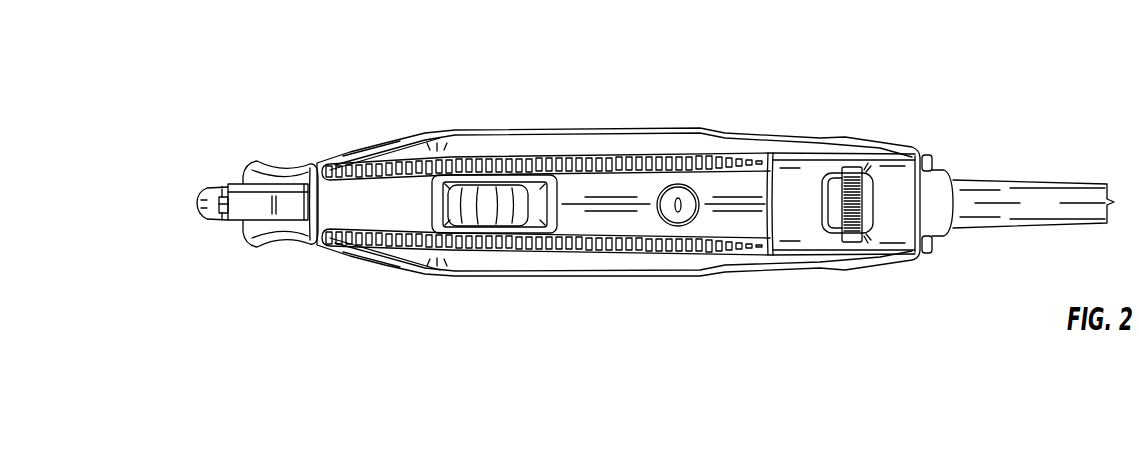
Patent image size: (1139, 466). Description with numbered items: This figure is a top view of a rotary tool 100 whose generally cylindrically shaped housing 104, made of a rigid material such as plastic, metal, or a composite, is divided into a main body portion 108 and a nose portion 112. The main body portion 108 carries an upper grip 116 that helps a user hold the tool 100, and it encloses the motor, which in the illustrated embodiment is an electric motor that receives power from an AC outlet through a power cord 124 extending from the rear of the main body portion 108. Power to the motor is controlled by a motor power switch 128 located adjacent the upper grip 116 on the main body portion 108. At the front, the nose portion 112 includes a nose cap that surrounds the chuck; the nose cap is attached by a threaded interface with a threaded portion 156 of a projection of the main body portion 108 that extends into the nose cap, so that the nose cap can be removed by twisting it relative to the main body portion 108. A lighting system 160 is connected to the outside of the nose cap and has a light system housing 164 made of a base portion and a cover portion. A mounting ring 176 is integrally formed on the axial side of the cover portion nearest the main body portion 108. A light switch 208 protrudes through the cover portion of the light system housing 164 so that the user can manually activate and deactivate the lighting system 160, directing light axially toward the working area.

The rotary tool 100 is at (226, 60).
The housing 104 is at (558, 268).
The main body portion 108 is at (680, 318).
The nose portion 112 is at (190, 160).
The upper grip 116 is at (623, 192).
The power cord 124 is at (983, 213).
The motor power switch 128 is at (492, 192).
The threaded portion 156 is at (283, 240).
The lighting system 160 is at (300, 135).
The light system housing 164 is at (261, 198).
The mounting ring 176 is at (318, 162).
The light switch 208 is at (223, 196).